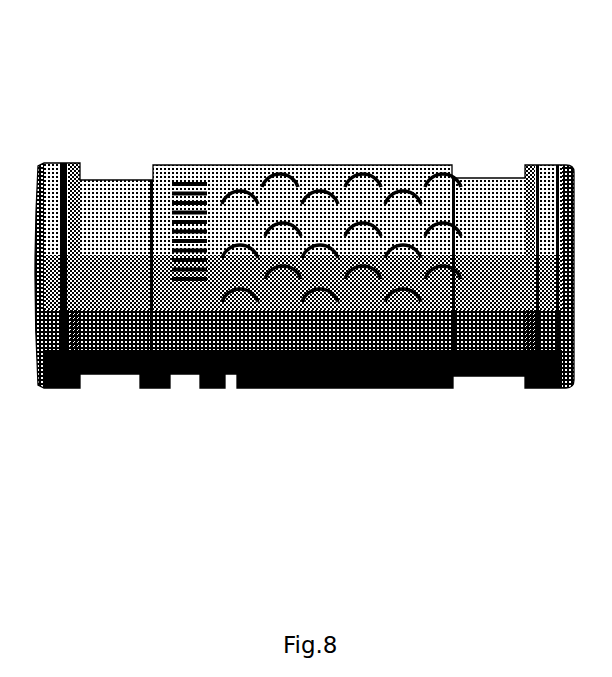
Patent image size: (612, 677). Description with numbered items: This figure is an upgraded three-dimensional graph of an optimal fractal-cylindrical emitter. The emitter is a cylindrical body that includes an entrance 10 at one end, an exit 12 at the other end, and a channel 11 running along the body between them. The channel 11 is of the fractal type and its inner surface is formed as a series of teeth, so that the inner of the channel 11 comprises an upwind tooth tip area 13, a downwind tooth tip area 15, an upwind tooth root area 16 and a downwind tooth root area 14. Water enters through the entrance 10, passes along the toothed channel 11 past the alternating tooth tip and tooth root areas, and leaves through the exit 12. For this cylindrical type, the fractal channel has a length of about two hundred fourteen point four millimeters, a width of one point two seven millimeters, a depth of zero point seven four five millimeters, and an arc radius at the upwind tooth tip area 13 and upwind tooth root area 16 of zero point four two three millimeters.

The entrance 10 is at (176, 172).
The channel 11 is at (441, 215).
The exit 12 is at (460, 365).
The upwind tooth tip area 13 is at (275, 185).
The downwind tooth root area 14 is at (312, 233).
The downwind tooth tip area 15 is at (297, 192).
The upwind tooth root area 16 is at (347, 225).